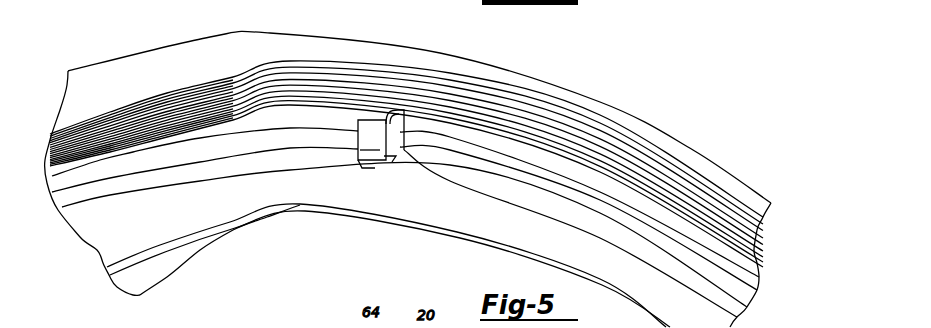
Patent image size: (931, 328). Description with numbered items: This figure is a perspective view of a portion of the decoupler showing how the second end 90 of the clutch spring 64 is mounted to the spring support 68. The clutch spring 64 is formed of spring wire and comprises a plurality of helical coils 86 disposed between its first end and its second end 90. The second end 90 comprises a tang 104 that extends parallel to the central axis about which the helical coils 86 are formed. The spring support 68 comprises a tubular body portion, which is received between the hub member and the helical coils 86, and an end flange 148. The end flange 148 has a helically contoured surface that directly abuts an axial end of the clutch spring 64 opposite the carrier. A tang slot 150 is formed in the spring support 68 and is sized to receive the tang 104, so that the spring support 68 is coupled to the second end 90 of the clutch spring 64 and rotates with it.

The clutch spring 64 is at (556, 126).
The spring support 68 is at (128, 165).
The helical coils 86 is at (449, 101).
The second end 90 is at (376, 100).
The tang 104 is at (372, 152).
The end flange 148 is at (262, 123).
The tang slot 150 is at (388, 150).